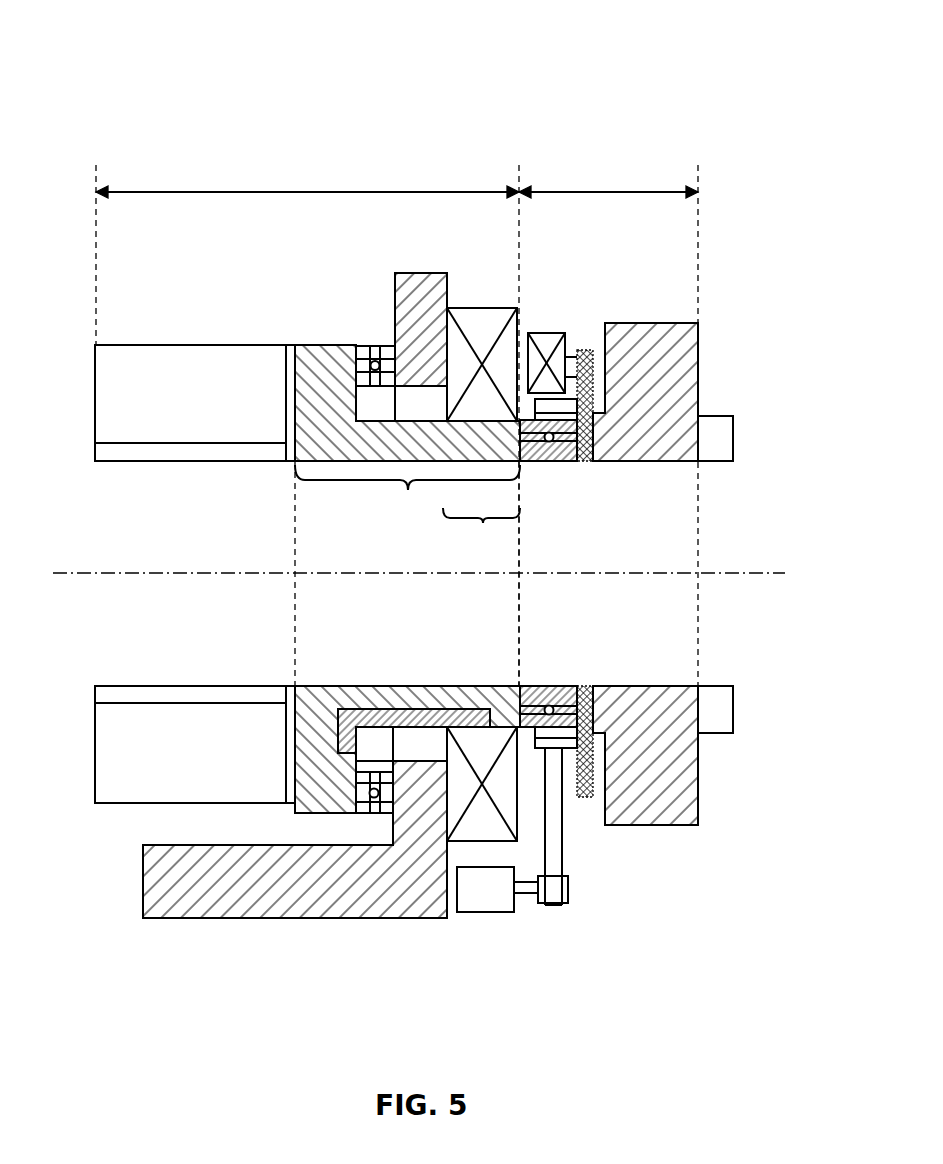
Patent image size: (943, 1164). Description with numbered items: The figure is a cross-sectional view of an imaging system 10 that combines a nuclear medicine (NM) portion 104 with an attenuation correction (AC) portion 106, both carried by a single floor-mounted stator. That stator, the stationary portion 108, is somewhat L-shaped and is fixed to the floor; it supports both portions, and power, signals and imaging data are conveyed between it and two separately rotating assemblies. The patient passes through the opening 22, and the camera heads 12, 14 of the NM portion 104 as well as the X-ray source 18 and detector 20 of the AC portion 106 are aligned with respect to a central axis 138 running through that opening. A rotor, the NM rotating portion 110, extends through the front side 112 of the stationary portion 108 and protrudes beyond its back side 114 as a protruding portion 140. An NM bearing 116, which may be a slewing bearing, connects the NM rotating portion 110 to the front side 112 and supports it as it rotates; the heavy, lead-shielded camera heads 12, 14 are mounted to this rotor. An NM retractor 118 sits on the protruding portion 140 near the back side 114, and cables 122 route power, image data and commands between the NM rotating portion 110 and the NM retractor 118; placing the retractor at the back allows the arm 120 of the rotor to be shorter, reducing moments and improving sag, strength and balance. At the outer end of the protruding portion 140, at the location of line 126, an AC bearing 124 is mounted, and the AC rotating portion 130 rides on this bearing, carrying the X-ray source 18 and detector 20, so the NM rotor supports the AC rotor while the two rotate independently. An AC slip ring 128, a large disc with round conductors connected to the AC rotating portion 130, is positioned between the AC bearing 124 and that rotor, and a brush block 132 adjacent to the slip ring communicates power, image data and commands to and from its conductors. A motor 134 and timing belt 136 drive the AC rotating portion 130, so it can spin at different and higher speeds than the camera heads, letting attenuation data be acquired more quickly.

The imaging system 10 is at (116, 50).
The camera head 12 is at (120, 390).
The camera head 14 is at (120, 752).
The X-ray source 18 is at (733, 436).
The detector 20 is at (733, 708).
The opening 22 is at (66, 513).
The NM portion 104 is at (307, 192).
The AC portion 106 is at (607, 192).
The stationary portion 108 is at (222, 898).
The NM rotating portion 110 is at (308, 372).
The front side 112 is at (395, 296).
The back side 114 is at (447, 282).
The NM bearing 116 is at (375, 346).
The NM retractor 118 is at (475, 330).
The arm 120 is at (407, 496).
The cables 122 is at (447, 715).
The AC bearing 124 is at (549, 700).
The line 126 is at (522, 553).
The AC slip ring 128 is at (585, 780).
The AC rotating portion 130 is at (672, 775).
The brush block 132 is at (545, 333).
The motor 134 is at (490, 893).
The timing belt 136 is at (563, 850).
The central axis 138 is at (163, 578).
The protruding portion 140 is at (481, 530).